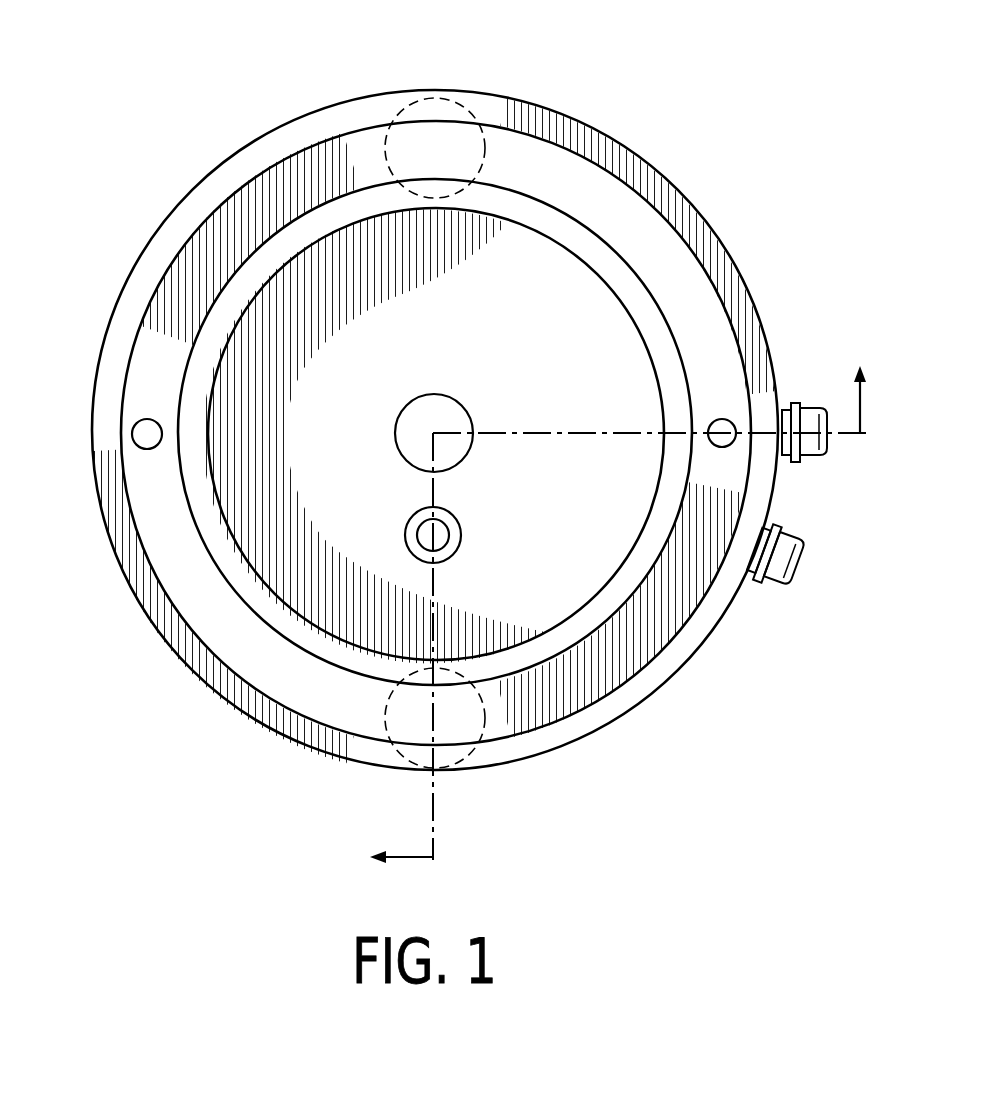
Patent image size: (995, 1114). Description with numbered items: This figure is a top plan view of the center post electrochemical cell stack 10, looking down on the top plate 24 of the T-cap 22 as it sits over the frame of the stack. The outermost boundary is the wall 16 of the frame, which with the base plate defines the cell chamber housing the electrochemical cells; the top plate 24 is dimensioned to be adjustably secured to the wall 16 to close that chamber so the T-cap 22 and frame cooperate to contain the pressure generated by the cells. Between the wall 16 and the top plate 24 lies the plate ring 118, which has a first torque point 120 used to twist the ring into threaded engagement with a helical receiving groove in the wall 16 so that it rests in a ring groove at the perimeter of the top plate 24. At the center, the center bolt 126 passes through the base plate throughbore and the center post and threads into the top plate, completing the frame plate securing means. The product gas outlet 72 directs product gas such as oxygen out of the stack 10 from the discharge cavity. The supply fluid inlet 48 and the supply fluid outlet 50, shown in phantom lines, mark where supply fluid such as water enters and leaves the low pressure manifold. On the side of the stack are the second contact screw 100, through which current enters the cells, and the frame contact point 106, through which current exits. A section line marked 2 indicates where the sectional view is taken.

The center post electrochemical cell stack 10 is at (212, 104).
The wall 16 is at (758, 345).
The T-cap 22 is at (518, 252).
The top plate 24 is at (578, 302).
The supply fluid inlet 48 is at (413, 731).
The supply fluid outlet 50 is at (446, 142).
The product gas outlet 72 is at (412, 536).
The second contact screw 100 is at (810, 448).
The frame contact point 106 is at (766, 582).
The plate ring 118 is at (197, 612).
The first torque point 120 is at (138, 430).
The center bolt 126 is at (443, 408).
The section line 2- 2 is at (634, 636).